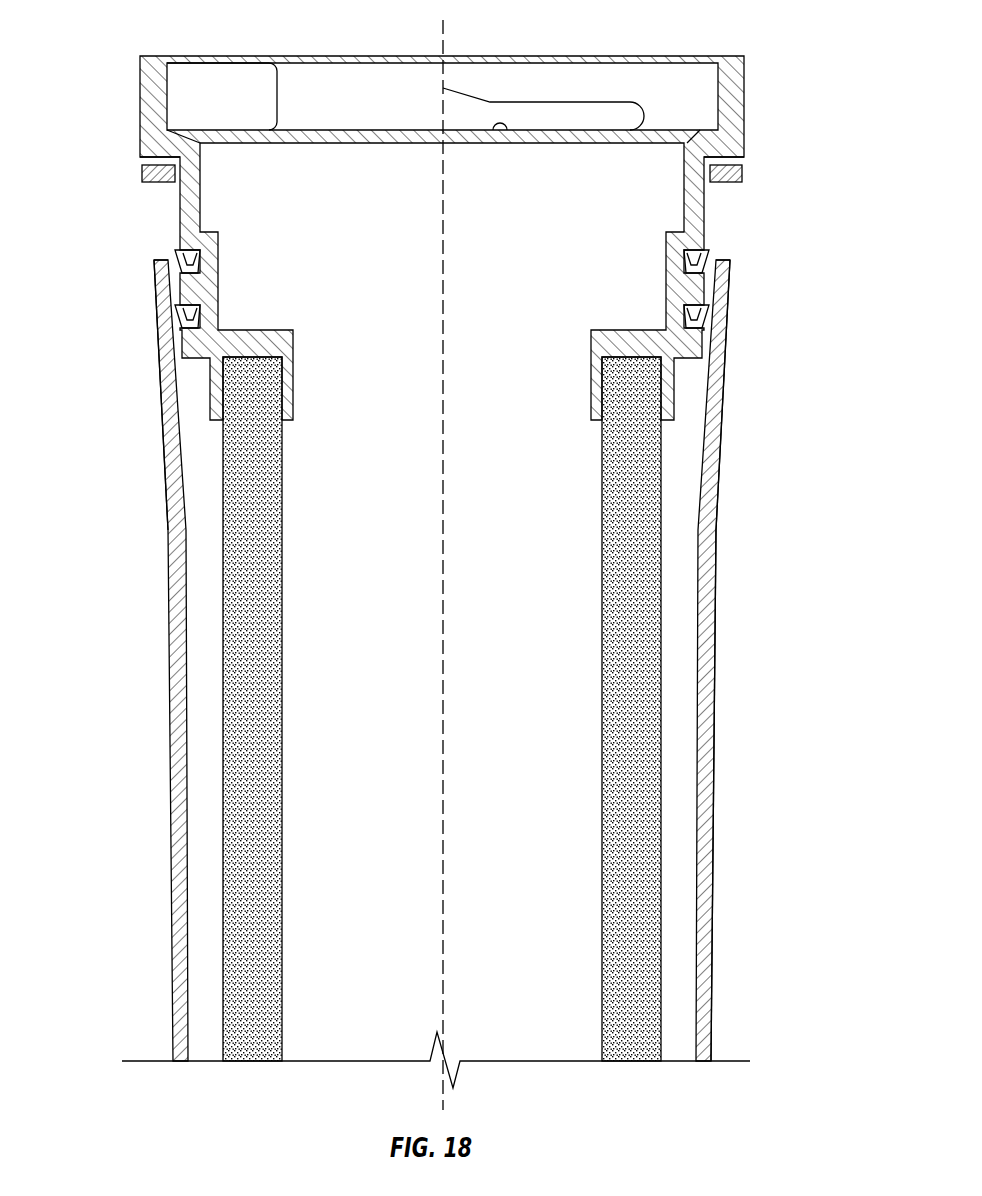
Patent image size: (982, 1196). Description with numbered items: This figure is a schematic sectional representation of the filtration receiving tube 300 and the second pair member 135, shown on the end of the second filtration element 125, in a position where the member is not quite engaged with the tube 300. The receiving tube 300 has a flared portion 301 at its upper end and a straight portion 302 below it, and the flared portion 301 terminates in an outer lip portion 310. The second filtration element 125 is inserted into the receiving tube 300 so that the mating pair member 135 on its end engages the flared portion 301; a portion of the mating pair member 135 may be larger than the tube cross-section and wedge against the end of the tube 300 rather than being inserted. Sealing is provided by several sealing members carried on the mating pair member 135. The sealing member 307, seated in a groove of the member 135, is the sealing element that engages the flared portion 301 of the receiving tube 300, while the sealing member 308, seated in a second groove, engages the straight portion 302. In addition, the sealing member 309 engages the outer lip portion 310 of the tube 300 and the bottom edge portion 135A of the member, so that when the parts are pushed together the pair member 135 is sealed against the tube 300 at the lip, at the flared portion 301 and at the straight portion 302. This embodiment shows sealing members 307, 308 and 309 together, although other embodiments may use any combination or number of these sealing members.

The second pair member 135 is at (153, 57).
The bottom edge portion of member 135A is at (139, 160).
The sealing member 309 is at (142, 176).
The sealing member 307 is at (190, 262).
The sealing member 308 is at (190, 317).
The flared portion 301 is at (152, 270).
The outer lip portion 310 is at (157, 258).
The straight portion 302 is at (157, 338).
The filtration receiving tube 300 is at (718, 512).
The second filtration element 125 is at (378, 766).